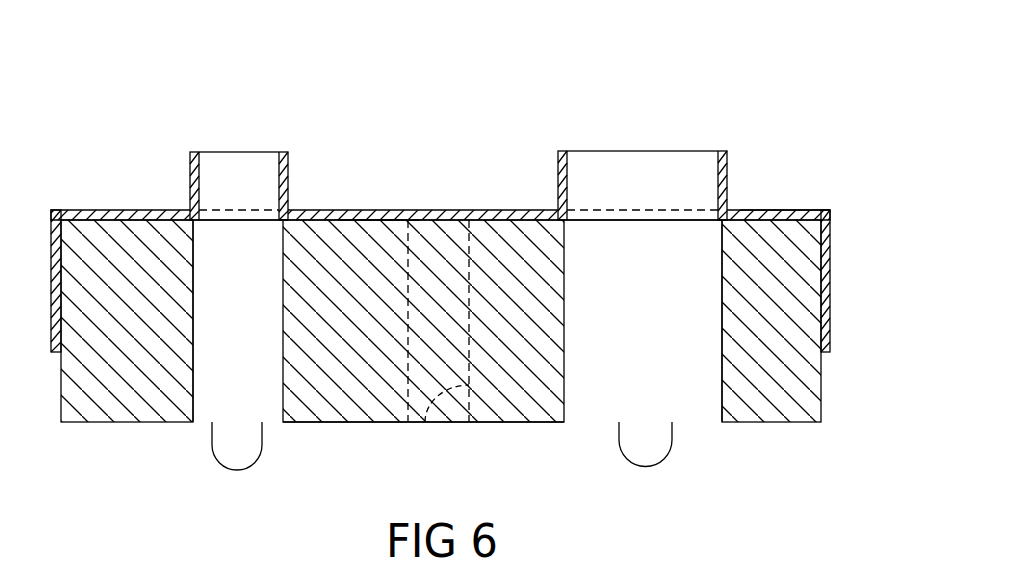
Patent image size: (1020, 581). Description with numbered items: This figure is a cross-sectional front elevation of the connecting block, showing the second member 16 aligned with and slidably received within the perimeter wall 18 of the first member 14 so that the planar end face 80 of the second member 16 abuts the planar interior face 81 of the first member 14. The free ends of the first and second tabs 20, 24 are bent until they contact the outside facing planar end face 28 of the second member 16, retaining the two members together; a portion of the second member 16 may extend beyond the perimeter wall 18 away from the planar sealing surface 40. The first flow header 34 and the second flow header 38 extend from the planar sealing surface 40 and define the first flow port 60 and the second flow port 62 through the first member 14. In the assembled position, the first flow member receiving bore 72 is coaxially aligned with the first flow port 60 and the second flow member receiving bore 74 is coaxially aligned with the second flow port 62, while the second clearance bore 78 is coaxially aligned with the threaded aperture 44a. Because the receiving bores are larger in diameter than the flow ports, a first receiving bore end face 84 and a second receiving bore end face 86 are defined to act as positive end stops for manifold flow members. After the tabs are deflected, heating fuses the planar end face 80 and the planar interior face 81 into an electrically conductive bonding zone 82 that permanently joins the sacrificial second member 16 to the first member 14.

The first member 14 is at (55, 322).
The second member 16 is at (657, 95).
The perimeter wall 18 is at (830, 293).
The first tabs 20 is at (240, 450).
The second tabs 24 is at (645, 452).
The outside facing planar end face 28 is at (505, 422).
The first flow header 34 is at (190, 183).
The second flow header 38 is at (725, 165).
The planar sealing surface 40 is at (100, 210).
The threaded aperture 44a is at (418, 212).
The first flow port 60 is at (237, 165).
The second flow port 62 is at (642, 165).
The first flow member receiving bore 72 is at (214, 388).
The second flow member receiving bore 74 is at (688, 388).
The second clearance bore 78 is at (421, 430).
The planar end face 80 is at (790, 212).
The planar interior face 81 is at (388, 223).
The bonding zone 82 is at (368, 218).
The first receiving bore end face 84 is at (282, 221).
The second receiving bore end face 86 is at (720, 221).